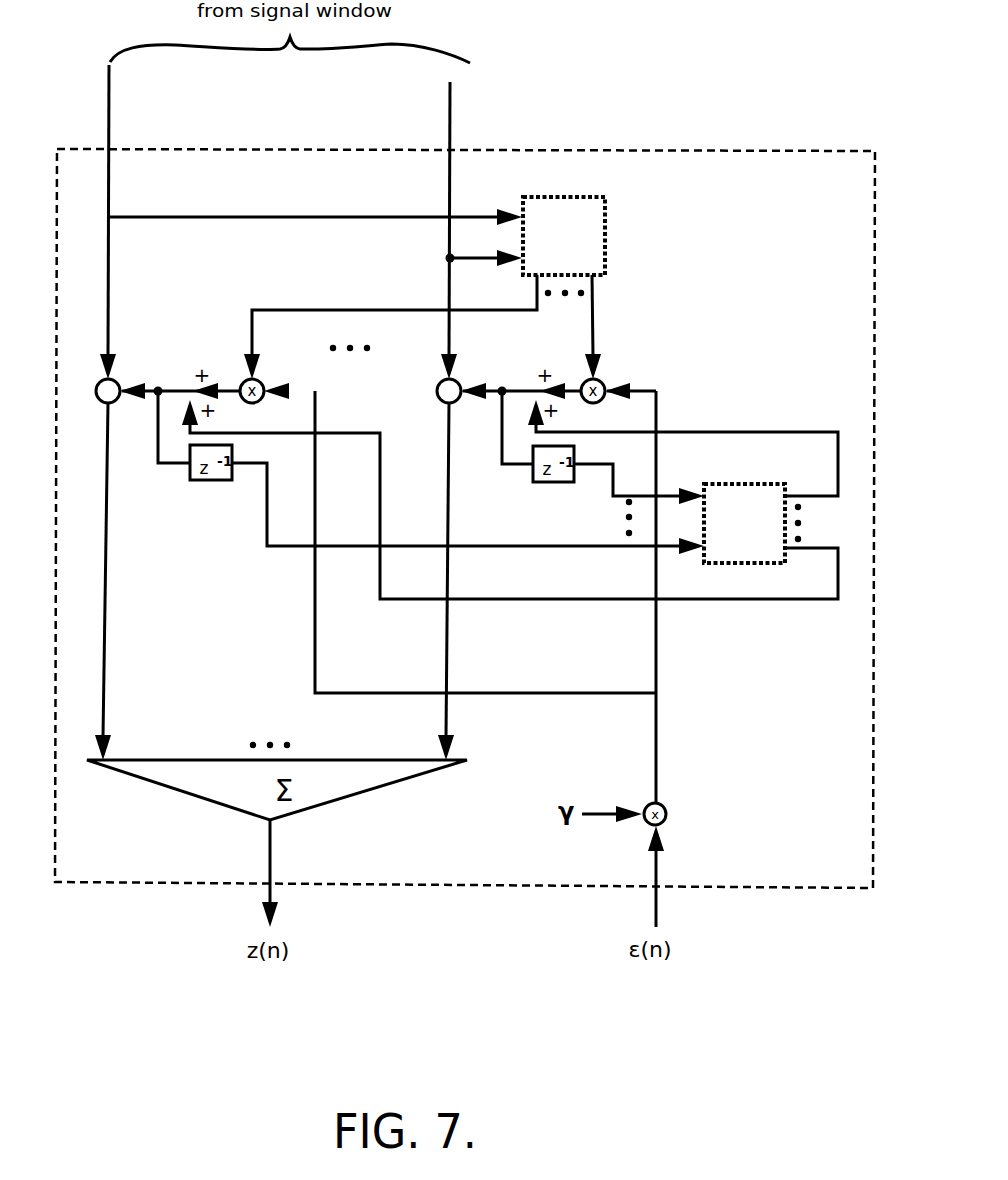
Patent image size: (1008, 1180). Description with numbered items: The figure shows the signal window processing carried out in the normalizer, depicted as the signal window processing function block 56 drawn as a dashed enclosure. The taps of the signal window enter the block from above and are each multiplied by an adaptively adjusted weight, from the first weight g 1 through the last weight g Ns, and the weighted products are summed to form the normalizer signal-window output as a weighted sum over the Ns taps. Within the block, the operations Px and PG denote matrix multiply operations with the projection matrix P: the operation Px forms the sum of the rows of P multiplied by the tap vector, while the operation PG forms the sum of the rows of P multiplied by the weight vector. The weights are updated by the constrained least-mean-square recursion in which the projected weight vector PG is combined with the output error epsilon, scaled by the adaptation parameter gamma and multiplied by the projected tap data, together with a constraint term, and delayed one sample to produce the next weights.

The signal window processing function block 56 is at (692, 150).
The first coefficient multiplier g1(n) 1 is at (135, 378).
The last coefficient multiplier gNs(n) Ns is at (473, 382).
The signal projection block Px is at (578, 247).
The gain projection block PG is at (760, 534).